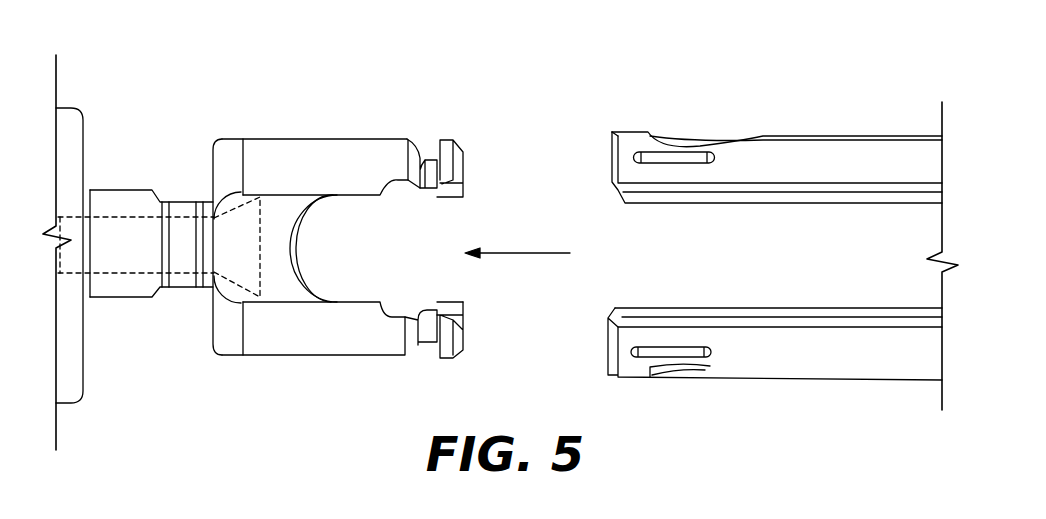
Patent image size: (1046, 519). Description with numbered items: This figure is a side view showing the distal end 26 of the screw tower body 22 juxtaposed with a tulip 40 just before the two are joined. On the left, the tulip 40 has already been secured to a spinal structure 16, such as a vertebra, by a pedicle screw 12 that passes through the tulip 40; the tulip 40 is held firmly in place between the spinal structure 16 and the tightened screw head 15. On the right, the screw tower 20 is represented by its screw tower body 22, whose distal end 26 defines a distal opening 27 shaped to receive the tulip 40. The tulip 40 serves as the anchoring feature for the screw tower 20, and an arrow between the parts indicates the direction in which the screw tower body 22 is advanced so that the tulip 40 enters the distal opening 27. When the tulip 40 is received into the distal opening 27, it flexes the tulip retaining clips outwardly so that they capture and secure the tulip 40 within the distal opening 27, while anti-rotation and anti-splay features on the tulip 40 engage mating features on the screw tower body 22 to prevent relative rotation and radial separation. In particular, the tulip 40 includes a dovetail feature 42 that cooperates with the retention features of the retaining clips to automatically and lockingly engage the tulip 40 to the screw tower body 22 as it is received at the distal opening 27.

The pedicle screw 12 is at (63, 258).
The spinal structure 16 is at (67, 133).
The screw head 15 is at (260, 248).
The tulip 40 is at (338, 199).
The dovetail feature 42 is at (430, 148).
The screw tower 20 is at (742, 212).
The screw tower body 22 is at (777, 130).
The distal end 26 is at (630, 130).
The distal opening 27 is at (632, 265).